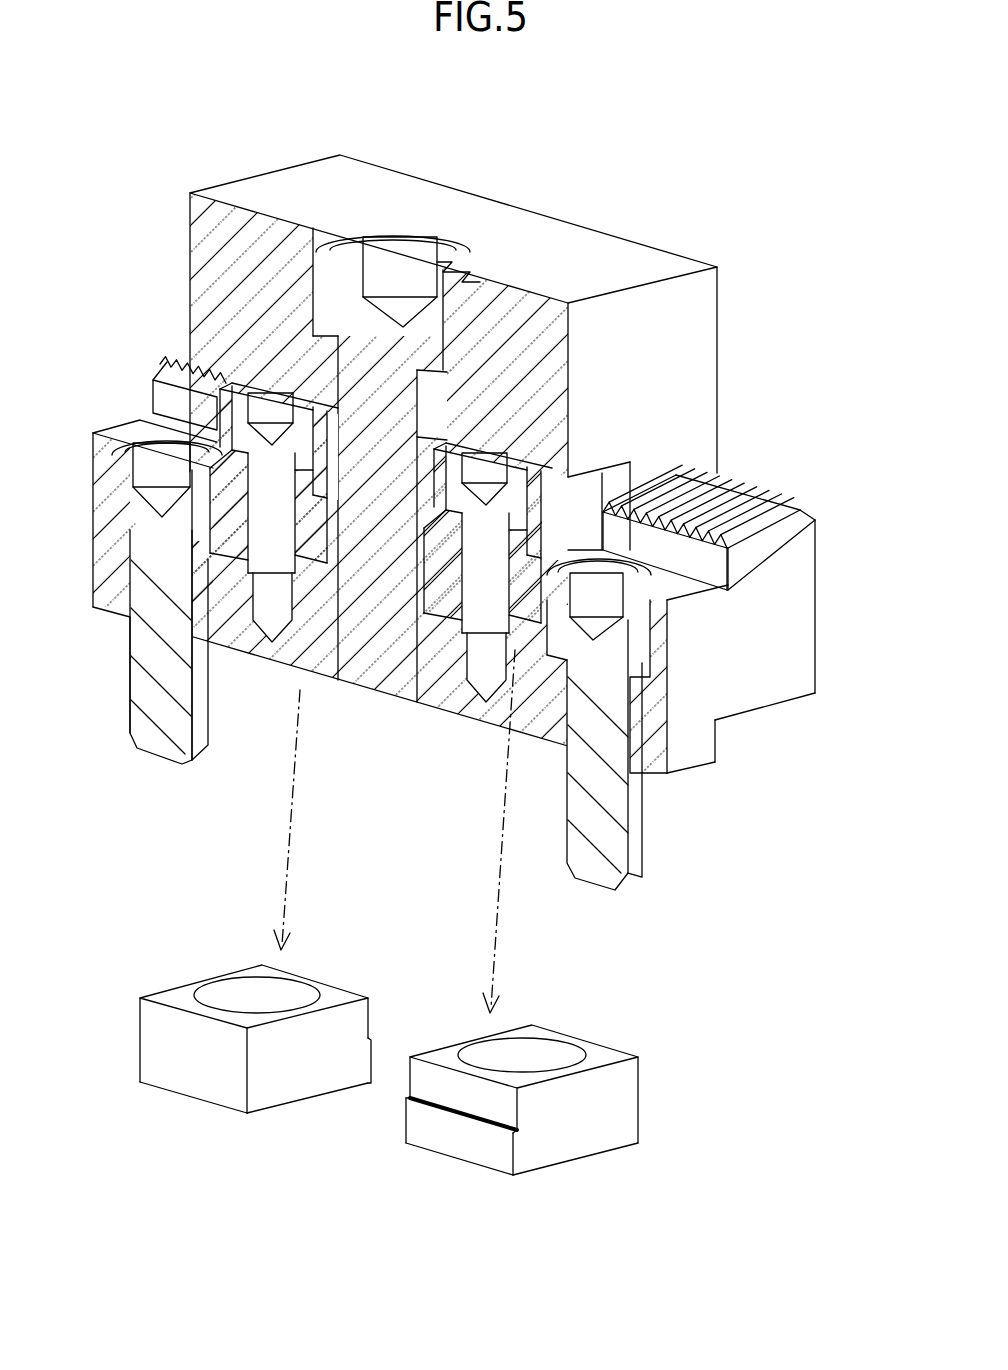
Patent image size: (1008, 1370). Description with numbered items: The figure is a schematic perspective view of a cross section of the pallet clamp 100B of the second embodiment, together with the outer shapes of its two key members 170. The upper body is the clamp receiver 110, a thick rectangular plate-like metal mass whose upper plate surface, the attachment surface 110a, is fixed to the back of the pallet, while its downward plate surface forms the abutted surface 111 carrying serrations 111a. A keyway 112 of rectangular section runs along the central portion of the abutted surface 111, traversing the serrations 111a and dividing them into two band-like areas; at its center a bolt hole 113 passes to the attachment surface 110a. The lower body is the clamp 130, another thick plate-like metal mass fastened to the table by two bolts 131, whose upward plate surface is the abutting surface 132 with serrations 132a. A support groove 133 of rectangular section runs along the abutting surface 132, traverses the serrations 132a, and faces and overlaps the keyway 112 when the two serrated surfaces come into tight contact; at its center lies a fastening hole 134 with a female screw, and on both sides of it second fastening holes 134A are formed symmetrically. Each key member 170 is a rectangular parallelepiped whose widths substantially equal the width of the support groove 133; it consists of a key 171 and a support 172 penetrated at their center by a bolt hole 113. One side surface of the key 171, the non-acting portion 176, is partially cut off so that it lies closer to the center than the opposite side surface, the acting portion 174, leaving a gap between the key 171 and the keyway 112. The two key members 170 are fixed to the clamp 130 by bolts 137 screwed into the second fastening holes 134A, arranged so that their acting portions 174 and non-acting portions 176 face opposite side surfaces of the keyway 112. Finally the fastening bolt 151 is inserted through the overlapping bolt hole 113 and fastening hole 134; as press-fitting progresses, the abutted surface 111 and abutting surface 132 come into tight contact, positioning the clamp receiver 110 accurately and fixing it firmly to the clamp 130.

The clamp receiver 110 is at (362, 157).
The pallet clamp 100B is at (690, 100).
The fastening bolt 151 is at (440, 240).
The attachment surface 110a is at (628, 262).
The bolt hole 113 is at (322, 290).
The bolt 137 is at (240, 405).
The serrations 111a is at (162, 372).
The key member 170 is at (220, 408).
The keyway 112 is at (596, 480).
The abutted surface 111 is at (680, 495).
The serrations 132a is at (720, 500).
The abutting surface 132 is at (740, 530).
The support groove 133 is at (690, 588).
The bolt 131 is at (140, 708).
The second fastening hole 134A is at (258, 548).
The fastening hole 134 is at (345, 655).
The clamp 130 is at (776, 710).
The non-acting portion 176 is at (370, 1018).
The acting portion 174 is at (153, 1037).
The key 171 is at (623, 1103).
The support 172 is at (585, 1143).